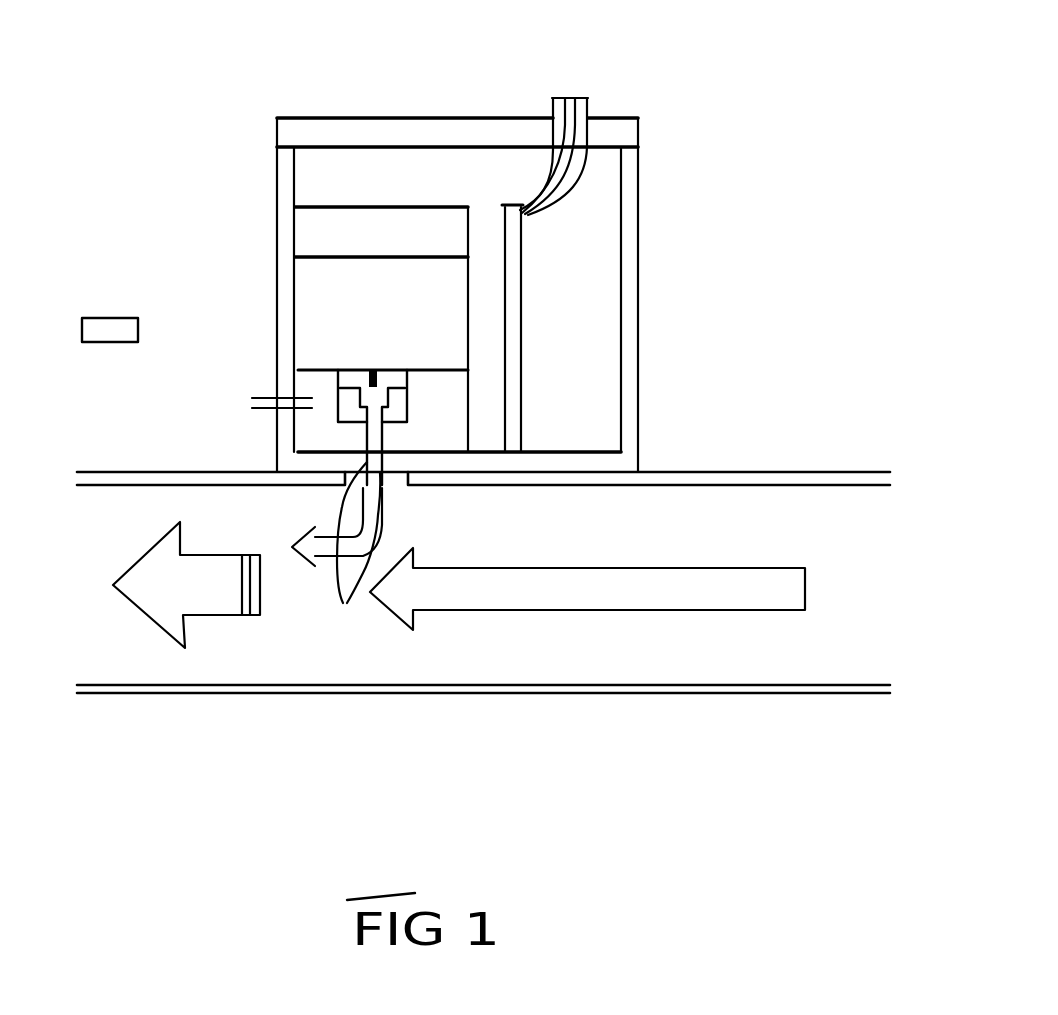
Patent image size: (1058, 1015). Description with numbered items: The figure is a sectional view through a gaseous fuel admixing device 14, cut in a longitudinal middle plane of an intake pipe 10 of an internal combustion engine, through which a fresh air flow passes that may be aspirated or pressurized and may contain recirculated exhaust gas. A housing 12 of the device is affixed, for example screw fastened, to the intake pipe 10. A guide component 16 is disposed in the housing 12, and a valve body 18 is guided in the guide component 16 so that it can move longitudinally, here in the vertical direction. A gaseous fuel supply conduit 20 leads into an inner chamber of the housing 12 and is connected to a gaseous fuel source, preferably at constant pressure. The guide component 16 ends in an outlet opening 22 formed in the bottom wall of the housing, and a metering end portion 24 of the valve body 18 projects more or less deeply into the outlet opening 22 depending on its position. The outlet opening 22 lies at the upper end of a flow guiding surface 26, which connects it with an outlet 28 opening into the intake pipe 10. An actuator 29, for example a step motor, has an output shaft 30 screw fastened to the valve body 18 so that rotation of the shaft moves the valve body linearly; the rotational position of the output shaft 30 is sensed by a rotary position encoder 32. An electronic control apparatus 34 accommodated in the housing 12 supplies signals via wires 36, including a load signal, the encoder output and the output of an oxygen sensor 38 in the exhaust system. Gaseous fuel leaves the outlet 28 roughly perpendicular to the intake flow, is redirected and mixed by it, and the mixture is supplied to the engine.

The intake pipe 10 is at (602, 693).
The housing 12 is at (635, 200).
The gaseous fuel admixing device 14 is at (332, 115).
The guide component 16 is at (340, 380).
The valve body 18 is at (360, 398).
The gaseous fuel supply conduit 20 is at (250, 403).
The outlet opening 22 is at (387, 445).
The metering end portion 24 is at (387, 440).
The flow guiding surface 26 is at (336, 560).
The outlet 28 is at (342, 600).
The actuator 29 is at (297, 257).
The output shaft 30 is at (376, 372).
The rotary position encoder 32 is at (317, 225).
The electronic control apparatus 34 is at (515, 270).
The wires 36 is at (573, 93).
The oxygen sensor 38 is at (102, 327).